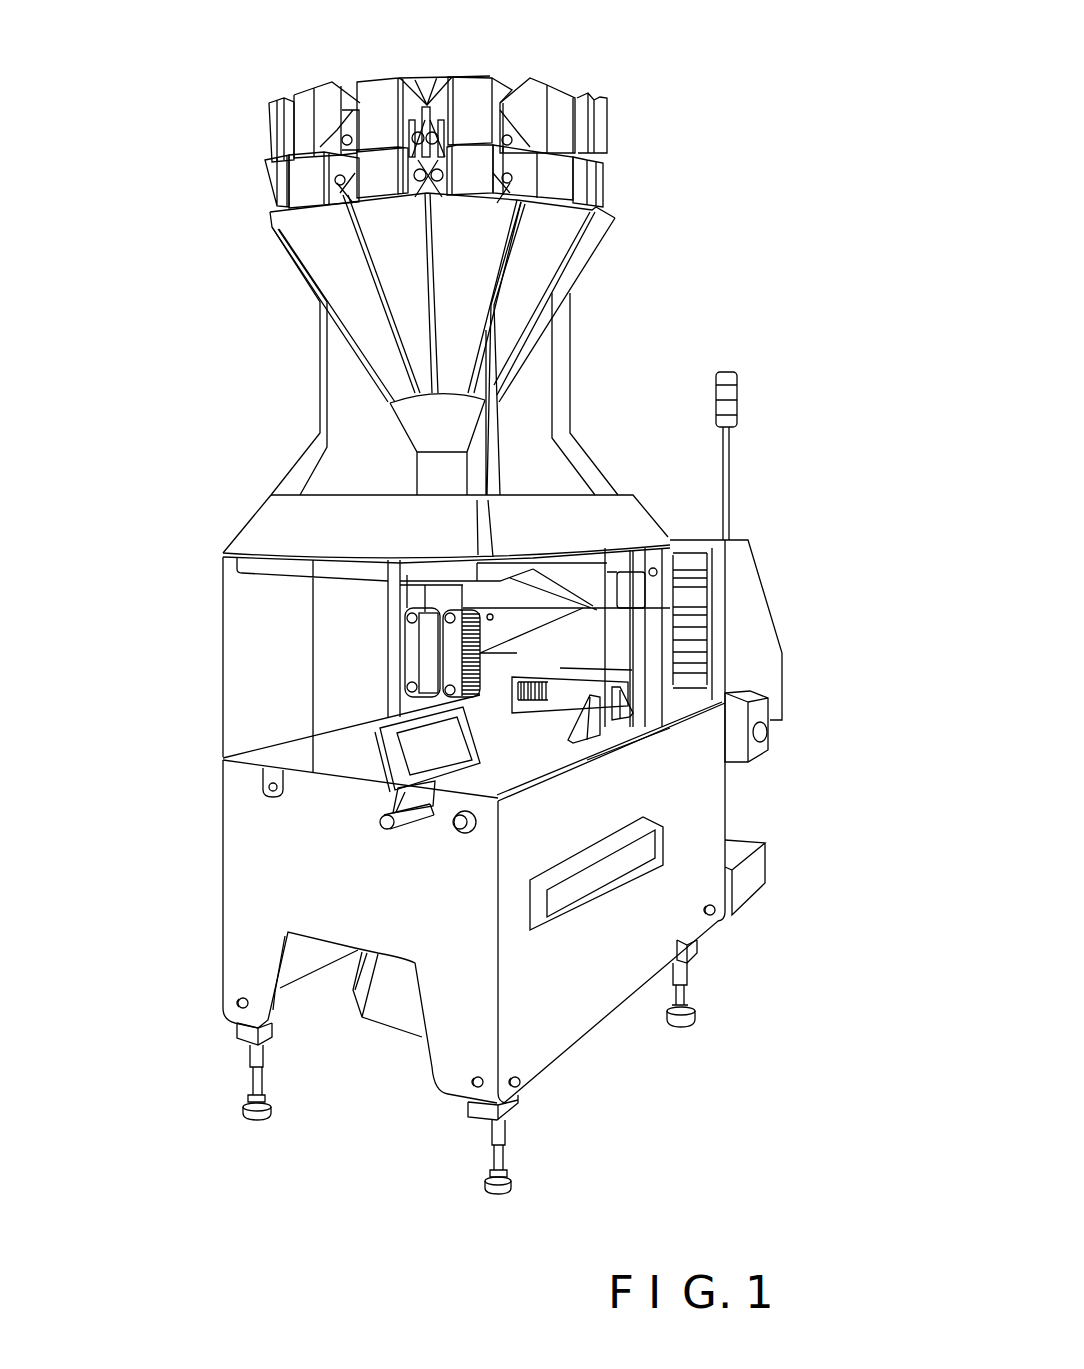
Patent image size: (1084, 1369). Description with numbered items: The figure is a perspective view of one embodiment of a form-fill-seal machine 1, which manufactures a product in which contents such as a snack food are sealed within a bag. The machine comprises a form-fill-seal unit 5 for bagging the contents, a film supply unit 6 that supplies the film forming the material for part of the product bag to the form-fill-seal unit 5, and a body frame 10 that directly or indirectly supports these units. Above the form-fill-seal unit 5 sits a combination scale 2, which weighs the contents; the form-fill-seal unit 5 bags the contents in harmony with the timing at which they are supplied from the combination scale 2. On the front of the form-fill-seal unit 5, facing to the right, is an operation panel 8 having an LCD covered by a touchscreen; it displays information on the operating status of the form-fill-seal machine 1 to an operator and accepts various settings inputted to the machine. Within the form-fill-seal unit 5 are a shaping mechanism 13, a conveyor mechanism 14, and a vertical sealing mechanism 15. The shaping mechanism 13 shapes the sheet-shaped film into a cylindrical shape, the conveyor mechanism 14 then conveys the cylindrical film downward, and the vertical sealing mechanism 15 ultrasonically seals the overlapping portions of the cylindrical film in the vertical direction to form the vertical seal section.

The form-fill-seal machine 1 is at (513, 783).
The combination scale 2 is at (632, 124).
The form-fill-seal unit 5 is at (526, 948).
The film supply unit 6 is at (492, 597).
The operation panel 8 is at (410, 755).
The body frame 10 is at (597, 960).
The shaping mechanism 13 is at (398, 594).
The conveyor mechanism 14 is at (390, 639).
The vertical sealing mechanism 15 is at (408, 672).